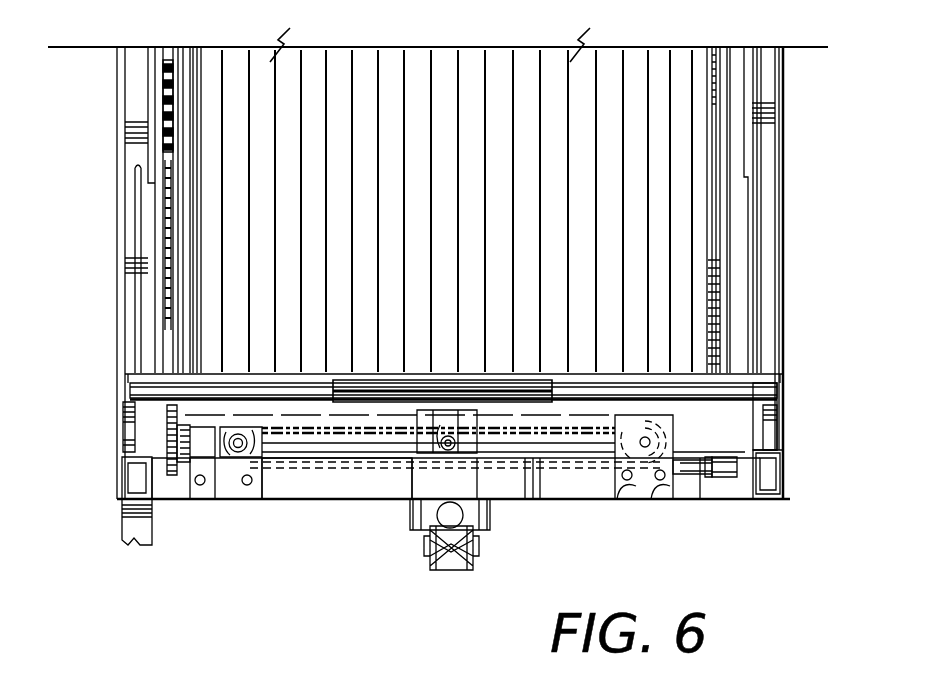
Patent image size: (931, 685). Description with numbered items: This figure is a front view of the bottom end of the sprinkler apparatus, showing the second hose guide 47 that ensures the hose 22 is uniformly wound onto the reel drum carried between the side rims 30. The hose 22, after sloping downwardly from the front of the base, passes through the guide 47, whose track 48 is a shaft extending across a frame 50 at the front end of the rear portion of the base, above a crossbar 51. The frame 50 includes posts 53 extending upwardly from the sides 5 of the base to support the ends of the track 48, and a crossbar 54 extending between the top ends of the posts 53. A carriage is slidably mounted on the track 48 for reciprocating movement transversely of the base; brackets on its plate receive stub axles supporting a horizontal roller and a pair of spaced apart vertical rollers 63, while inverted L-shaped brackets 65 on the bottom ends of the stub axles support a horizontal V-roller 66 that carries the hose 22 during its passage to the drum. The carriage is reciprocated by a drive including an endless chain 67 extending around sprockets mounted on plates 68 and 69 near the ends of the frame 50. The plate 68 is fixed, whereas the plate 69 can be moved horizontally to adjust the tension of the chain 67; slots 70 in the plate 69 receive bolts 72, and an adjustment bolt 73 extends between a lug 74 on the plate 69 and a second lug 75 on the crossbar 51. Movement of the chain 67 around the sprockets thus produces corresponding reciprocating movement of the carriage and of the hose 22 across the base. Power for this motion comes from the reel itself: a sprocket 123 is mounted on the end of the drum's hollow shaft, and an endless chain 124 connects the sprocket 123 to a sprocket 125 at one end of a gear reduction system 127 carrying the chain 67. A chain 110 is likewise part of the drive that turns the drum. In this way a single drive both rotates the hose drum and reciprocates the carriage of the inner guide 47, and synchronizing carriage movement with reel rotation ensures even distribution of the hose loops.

The sides 5 is at (122, 497).
The hose 22 is at (640, 92).
The side rims 30 is at (722, 147).
The second guide 47 is at (396, 586).
The track 48 is at (745, 392).
The frame 50 is at (780, 401).
The crossbar 51 is at (290, 499).
The posts 53 is at (128, 392).
The crossbar 54 is at (140, 378).
The vertical rollers 63 is at (490, 517).
The inverted L-shaped brackets 65 is at (412, 520).
The horizontal V-roller 66 is at (458, 568).
The endless chain 67 is at (566, 443).
The plate 69 is at (672, 498).
The slots 70 is at (648, 452).
The bolts 72 is at (626, 480).
The adjustment bolt 73 is at (740, 472).
The lug 74 is at (716, 478).
The second lug 75 is at (756, 482).
The plate 68 is at (240, 458).
The chain 110 is at (712, 292).
The sprocket 123 is at (165, 95).
The endless chain 124 is at (168, 257).
The sprocket 125 is at (166, 441).
The gear reduction system 127 is at (212, 462).